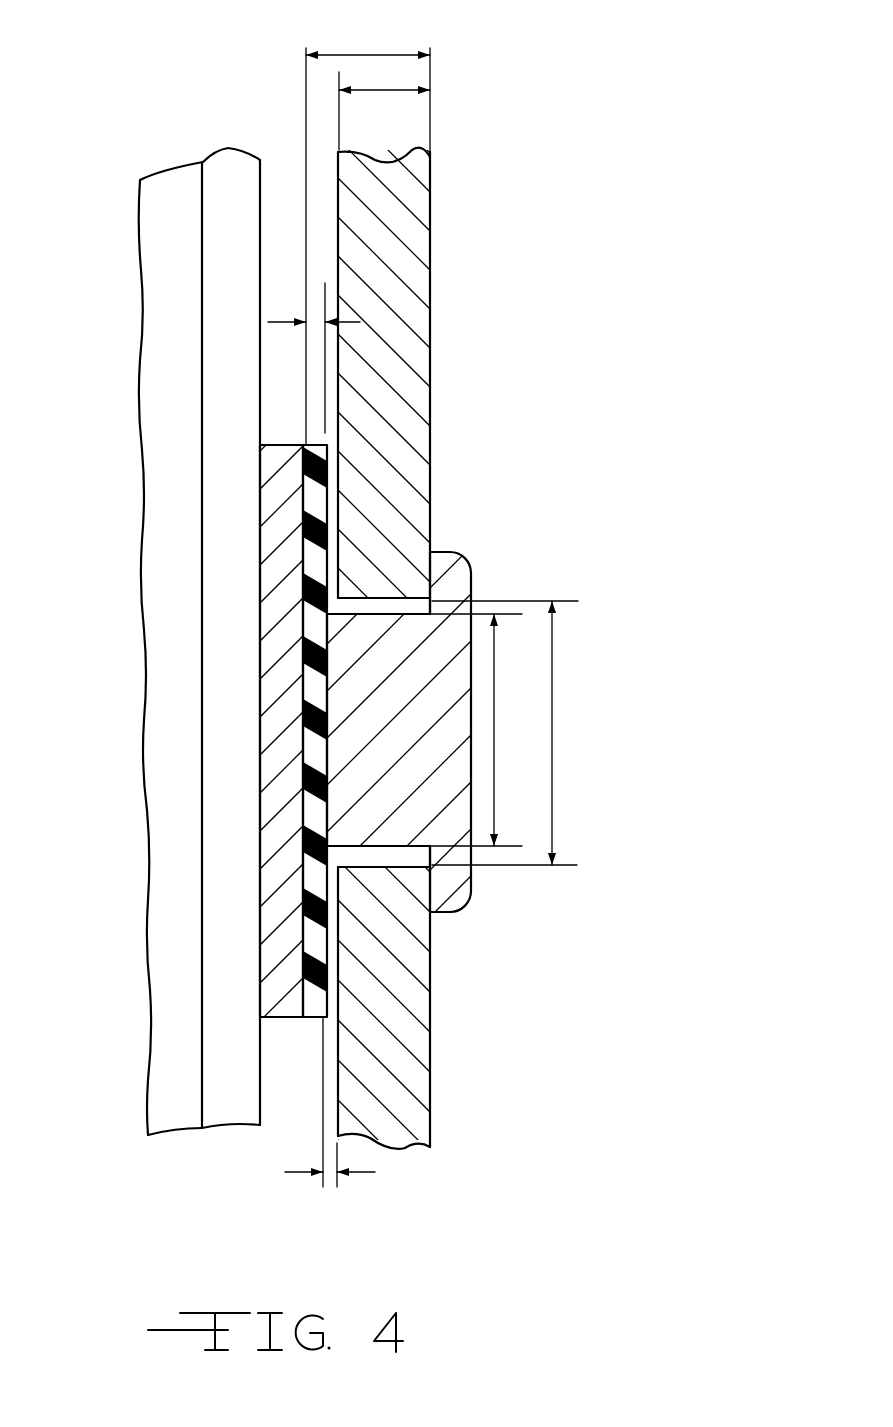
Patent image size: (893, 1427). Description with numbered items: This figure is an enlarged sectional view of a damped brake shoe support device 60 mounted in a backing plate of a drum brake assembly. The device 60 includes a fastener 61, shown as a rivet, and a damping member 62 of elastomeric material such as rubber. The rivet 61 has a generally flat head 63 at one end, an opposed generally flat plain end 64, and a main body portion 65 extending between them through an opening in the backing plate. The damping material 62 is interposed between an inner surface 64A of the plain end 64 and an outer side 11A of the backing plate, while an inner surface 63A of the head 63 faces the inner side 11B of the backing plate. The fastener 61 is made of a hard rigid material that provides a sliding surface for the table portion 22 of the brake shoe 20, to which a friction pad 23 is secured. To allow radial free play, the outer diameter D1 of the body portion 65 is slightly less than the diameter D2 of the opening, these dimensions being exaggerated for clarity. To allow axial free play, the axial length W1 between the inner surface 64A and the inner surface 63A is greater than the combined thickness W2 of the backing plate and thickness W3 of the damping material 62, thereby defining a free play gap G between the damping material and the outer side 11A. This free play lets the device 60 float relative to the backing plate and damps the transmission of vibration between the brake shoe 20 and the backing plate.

The brake shoe 20 is at (150, 667).
The table portion 22 is at (214, 1104).
The friction pad 23 is at (160, 1108).
The damping member 62 is at (313, 492).
The plain end 64 is at (262, 994).
The inner surface of the plain end 64A is at (298, 930).
The outer side of the backing plate 11A is at (335, 418).
The inner side of the backing plate 11B is at (432, 461).
The damped brake shoe support device 60 is at (419, 753).
The fastener 61 is at (454, 918).
The head 63 is at (474, 589).
The inner surface of the head 63A is at (428, 578).
The main body portion 65 is at (423, 757).
The axial length W1 is at (370, 53).
The thickness of the backing plate W2 is at (387, 92).
The thickness of the damping material W3 is at (313, 318).
The outer diameter of the body portion D1 is at (495, 740).
The diameter of the opening D2 is at (553, 665).
The free play gap G is at (325, 1190).